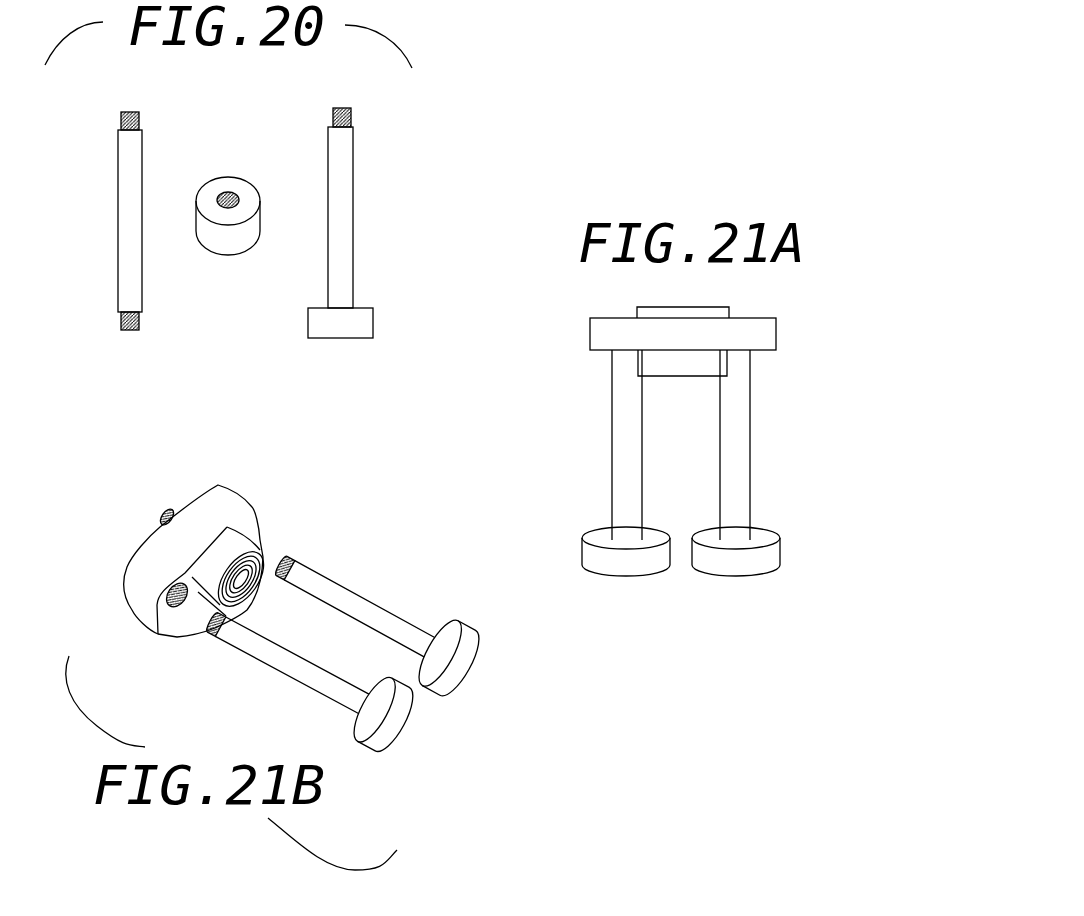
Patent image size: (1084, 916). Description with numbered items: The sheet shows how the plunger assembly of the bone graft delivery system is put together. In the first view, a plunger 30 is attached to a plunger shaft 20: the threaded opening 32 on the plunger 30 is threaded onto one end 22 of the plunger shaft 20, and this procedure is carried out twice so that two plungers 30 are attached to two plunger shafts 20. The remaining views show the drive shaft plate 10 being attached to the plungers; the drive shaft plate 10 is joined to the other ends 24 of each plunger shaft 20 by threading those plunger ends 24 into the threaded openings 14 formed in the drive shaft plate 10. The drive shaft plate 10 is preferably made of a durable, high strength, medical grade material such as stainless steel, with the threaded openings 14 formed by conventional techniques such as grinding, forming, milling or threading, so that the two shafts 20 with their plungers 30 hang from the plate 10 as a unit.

In FIG. 21A, the drive shaft plate 10 is at (685, 401).
In FIG. 21B, the drive shaft plate 10 is at (339, 586).
In FIG. 21B, the threaded openings 14 is at (190, 582).
In FIG. 20, the plunger shaft 20 is at (118, 215).
In FIG. 21A, the plunger shaft 20 is at (772, 420).
In FIG. 21B, the plunger shaft 20 is at (343, 586).
In FIG. 20, the one end of plunger shaft 22 is at (120, 328).
In FIG. 21A, the other end of plunger shaft 24 is at (589, 370).
In FIG. 21B, the other end of plunger shaft 24 is at (222, 628).
In FIG. 20, the plunger 30 is at (258, 165).
In FIG. 21A, the plunger 30 is at (805, 546).
In FIG. 21B, the plunger 30 is at (495, 662).
In FIG. 20, the threaded opening 32 is at (229, 163).